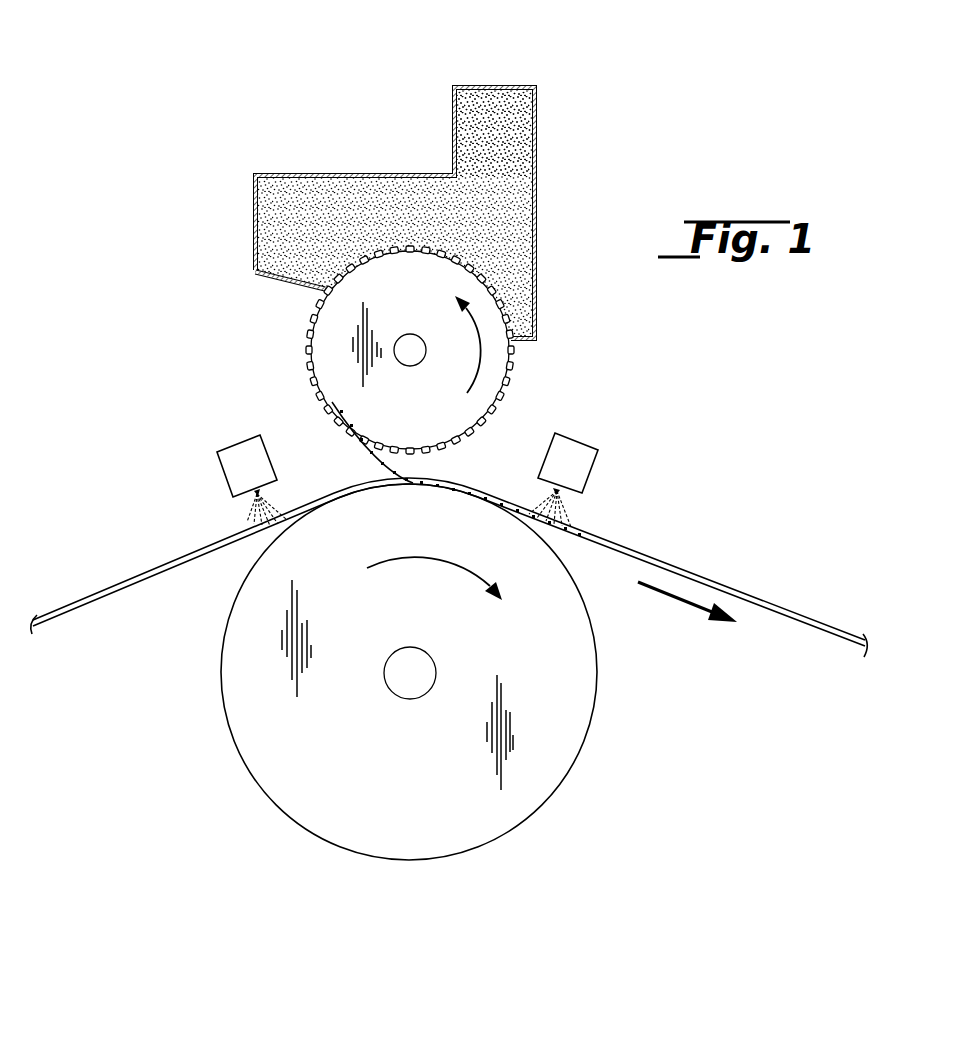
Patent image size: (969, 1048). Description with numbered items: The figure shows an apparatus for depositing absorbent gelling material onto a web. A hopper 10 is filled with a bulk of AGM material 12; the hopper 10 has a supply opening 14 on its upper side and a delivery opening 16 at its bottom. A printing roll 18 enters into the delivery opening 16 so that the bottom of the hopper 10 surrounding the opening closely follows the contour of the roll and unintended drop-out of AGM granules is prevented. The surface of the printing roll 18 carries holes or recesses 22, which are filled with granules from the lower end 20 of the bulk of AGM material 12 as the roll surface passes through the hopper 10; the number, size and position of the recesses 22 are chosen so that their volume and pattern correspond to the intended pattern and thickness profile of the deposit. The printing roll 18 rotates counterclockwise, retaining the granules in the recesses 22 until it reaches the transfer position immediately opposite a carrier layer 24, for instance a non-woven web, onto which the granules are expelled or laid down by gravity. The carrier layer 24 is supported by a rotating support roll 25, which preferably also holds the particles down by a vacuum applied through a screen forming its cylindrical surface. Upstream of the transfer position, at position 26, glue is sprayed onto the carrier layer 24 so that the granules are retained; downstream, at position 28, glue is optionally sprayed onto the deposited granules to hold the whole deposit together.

The hopper 10 is at (364, 166).
The bulk of AGM material 12 is at (510, 154).
The supply opening 14 is at (492, 92).
The delivery opening 16 is at (330, 279).
The printing roll 18 is at (512, 378).
The lower end of the bulk of AGM material 20 is at (457, 250).
The recesses 22 is at (490, 413).
The carrier layer 24 is at (82, 618).
The support roll 25 is at (572, 680).
The upstream position 26 is at (236, 516).
The downstream position 28 is at (579, 513).